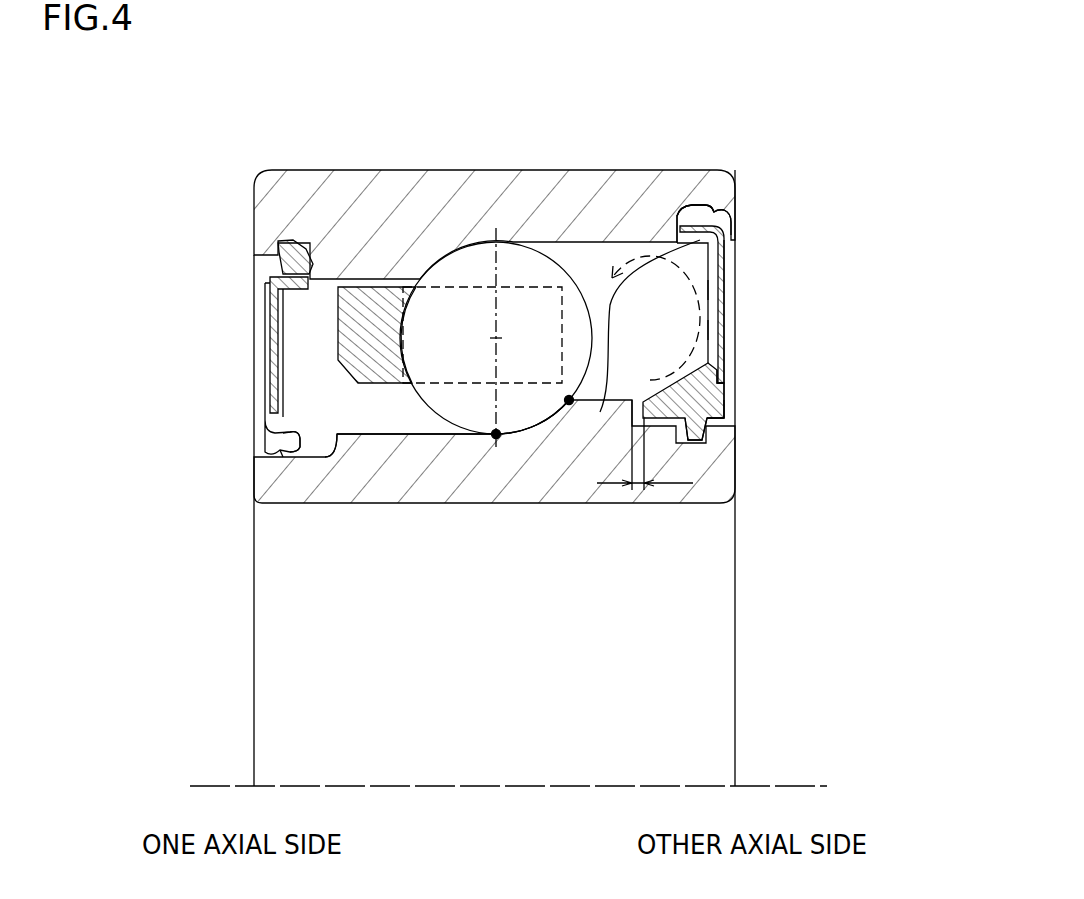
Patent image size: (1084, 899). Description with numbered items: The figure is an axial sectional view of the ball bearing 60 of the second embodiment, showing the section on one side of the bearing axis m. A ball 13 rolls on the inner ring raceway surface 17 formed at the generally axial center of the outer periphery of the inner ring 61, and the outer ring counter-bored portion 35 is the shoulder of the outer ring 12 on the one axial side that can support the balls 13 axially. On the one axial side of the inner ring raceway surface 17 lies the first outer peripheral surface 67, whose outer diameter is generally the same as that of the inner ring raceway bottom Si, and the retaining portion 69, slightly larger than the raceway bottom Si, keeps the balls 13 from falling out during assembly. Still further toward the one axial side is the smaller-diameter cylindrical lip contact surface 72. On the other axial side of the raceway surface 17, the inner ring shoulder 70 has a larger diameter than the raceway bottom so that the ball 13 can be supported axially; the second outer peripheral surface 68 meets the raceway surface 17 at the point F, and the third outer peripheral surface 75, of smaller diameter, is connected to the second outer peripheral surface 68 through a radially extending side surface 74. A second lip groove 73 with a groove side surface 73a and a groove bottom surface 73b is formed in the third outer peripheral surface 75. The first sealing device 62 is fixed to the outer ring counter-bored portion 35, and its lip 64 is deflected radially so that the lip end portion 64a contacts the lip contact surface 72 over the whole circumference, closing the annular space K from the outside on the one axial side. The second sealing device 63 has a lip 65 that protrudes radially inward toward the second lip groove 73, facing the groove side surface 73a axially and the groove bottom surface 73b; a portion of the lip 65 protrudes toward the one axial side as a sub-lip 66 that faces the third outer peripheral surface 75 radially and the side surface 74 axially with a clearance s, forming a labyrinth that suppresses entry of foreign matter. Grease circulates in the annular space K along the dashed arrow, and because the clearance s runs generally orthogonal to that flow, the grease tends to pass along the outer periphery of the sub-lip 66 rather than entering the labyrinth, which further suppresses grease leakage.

The outer ring 12 is at (420, 178).
The ball 13 is at (468, 426).
The inner ring raceway surface 17 is at (556, 405).
The outer ring counter-bored portion 35 is at (353, 263).
The ball bearing 60 is at (788, 104).
The inner ring 61 is at (323, 496).
The first sealing device 62 is at (272, 328).
The second sealing device 63 is at (724, 262).
The lip 64 is at (268, 447).
The lip end portion 64a is at (262, 488).
The lip 65 is at (723, 405).
The sub-lip 66 is at (696, 288).
The first outer peripheral surface 67 is at (366, 432).
The second outer peripheral surface 68 is at (714, 212).
The retaining portion 69 is at (462, 423).
The inner ring shoulder 70 is at (600, 412).
The lip contact surface 72 is at (314, 450).
The second lip groove 73 is at (915, 462).
The groove side surface 73a is at (714, 429).
The groove bottom surface 73b is at (692, 442).
The side surface 74 is at (722, 328).
The third outer peripheral surface 75 is at (722, 388).
The annular space K is at (572, 252).
The point F is at (574, 415).
The inner ring raceway bottom Si is at (496, 439).
The clearance s is at (645, 445).
The bearing axis m is at (770, 786).